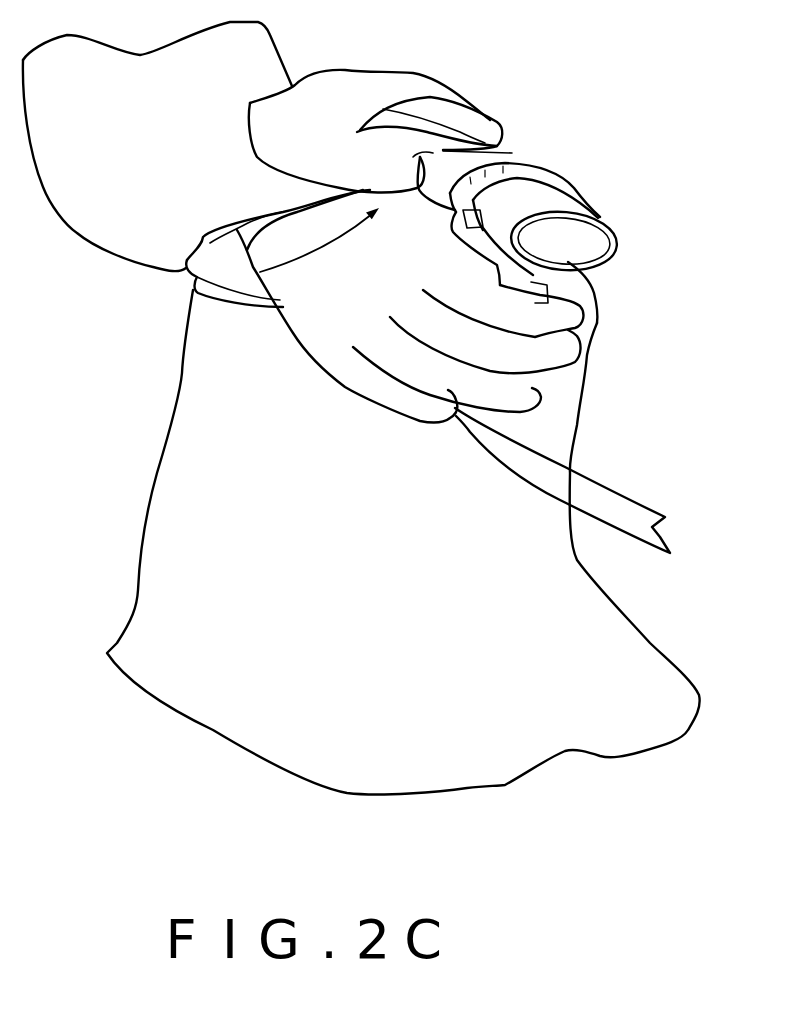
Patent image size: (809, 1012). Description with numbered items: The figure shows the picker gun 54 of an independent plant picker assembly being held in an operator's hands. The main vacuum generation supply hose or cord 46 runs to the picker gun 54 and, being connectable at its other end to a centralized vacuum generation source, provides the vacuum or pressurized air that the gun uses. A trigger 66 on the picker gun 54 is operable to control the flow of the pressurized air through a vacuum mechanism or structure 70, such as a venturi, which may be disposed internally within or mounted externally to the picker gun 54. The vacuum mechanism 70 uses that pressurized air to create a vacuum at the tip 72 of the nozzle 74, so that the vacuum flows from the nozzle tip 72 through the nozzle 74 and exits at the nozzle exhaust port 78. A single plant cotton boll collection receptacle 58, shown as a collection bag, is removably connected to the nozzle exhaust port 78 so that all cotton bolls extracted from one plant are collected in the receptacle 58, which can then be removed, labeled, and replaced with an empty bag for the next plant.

The main vacuum generation supply hose or cord 46 is at (603, 510).
The picker gun 54 is at (618, 157).
The single plant cotton boll collection receptacle 58 is at (217, 375).
The trigger 66 is at (584, 313).
The vacuum mechanism or structure 70 is at (535, 152).
The nozzle tip 72 is at (612, 250).
The nozzle 74 is at (570, 207).
The nozzle exhaust port 78 is at (265, 273).